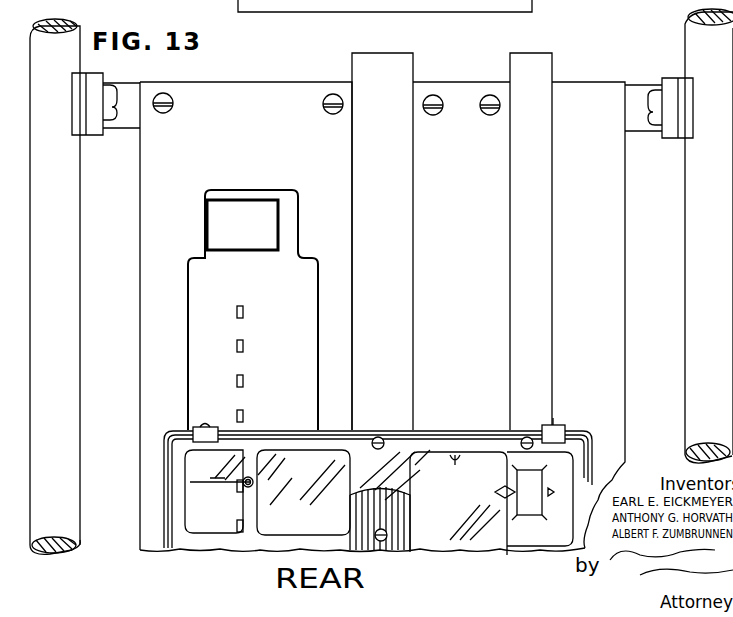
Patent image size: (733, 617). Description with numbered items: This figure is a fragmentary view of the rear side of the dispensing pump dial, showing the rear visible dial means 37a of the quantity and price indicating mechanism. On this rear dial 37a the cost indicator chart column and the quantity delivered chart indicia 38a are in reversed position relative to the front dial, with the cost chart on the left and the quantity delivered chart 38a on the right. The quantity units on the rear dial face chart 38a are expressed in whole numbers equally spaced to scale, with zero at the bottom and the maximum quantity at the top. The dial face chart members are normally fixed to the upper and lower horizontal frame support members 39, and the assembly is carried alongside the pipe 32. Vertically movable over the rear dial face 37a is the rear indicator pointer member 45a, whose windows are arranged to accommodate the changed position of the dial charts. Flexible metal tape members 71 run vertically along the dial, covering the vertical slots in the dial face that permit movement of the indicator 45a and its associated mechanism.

The rear visible dial means 37a is at (283, 58).
The rear dial face chart 38a is at (463, 88).
The flexible metal tape members 71 is at (404, 70).
The horizontal frame support members 39 is at (643, 90).
The support pipe 32 is at (681, 154).
The rear indicator pointer member 45a is at (585, 426).